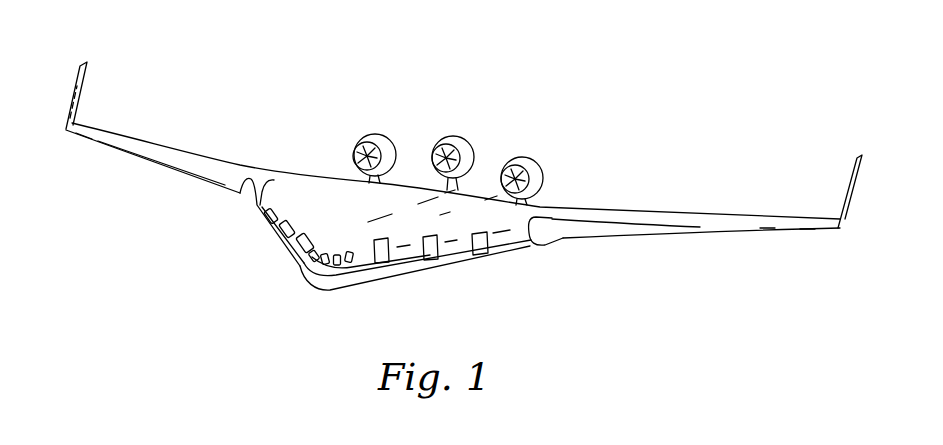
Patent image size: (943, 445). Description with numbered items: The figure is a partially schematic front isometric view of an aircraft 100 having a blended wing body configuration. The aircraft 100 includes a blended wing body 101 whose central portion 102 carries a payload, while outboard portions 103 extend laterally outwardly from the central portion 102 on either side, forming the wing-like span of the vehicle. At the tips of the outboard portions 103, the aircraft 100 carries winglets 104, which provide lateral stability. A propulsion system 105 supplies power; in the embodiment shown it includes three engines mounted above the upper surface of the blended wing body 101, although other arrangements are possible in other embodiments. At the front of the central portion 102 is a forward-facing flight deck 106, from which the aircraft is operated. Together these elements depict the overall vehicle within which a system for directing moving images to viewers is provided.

The aircraft 100 is at (558, 283).
The blended wing body 101 is at (483, 188).
The central portion 102 is at (330, 178).
The outboard portions 103 is at (173, 148).
The winglets 104 is at (78, 80).
The propulsion system 105 is at (546, 135).
The flight deck 106 is at (296, 263).